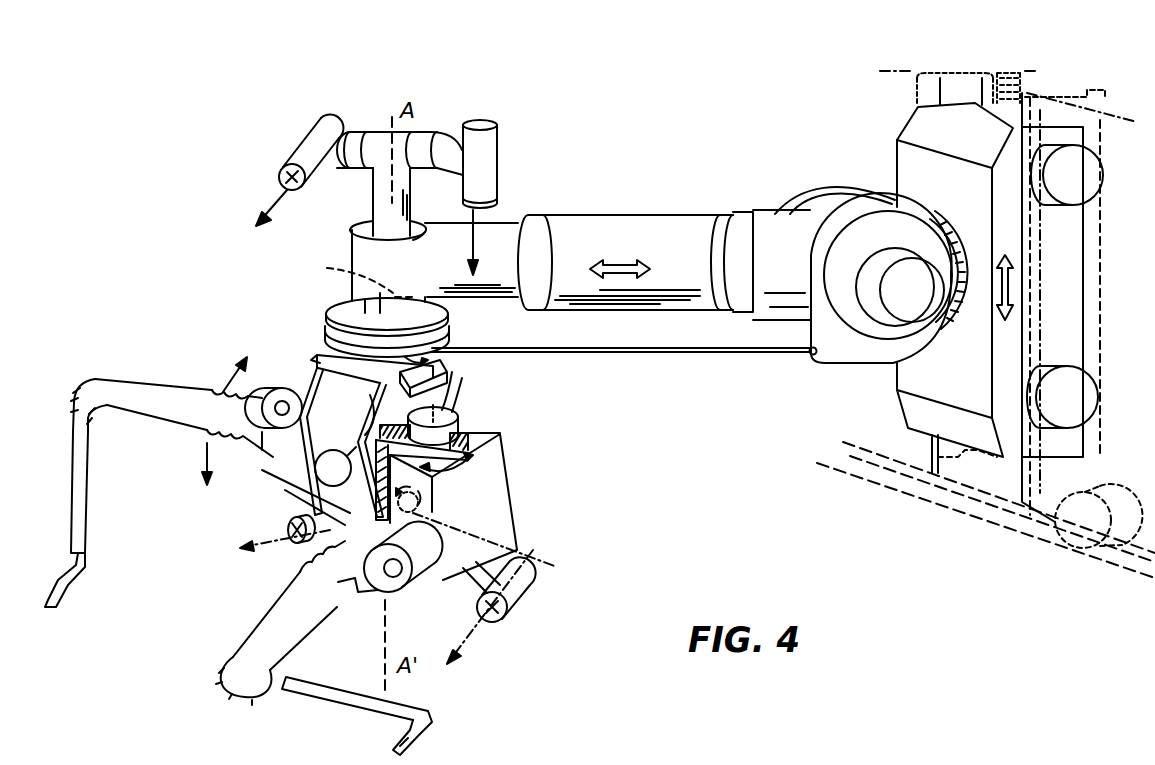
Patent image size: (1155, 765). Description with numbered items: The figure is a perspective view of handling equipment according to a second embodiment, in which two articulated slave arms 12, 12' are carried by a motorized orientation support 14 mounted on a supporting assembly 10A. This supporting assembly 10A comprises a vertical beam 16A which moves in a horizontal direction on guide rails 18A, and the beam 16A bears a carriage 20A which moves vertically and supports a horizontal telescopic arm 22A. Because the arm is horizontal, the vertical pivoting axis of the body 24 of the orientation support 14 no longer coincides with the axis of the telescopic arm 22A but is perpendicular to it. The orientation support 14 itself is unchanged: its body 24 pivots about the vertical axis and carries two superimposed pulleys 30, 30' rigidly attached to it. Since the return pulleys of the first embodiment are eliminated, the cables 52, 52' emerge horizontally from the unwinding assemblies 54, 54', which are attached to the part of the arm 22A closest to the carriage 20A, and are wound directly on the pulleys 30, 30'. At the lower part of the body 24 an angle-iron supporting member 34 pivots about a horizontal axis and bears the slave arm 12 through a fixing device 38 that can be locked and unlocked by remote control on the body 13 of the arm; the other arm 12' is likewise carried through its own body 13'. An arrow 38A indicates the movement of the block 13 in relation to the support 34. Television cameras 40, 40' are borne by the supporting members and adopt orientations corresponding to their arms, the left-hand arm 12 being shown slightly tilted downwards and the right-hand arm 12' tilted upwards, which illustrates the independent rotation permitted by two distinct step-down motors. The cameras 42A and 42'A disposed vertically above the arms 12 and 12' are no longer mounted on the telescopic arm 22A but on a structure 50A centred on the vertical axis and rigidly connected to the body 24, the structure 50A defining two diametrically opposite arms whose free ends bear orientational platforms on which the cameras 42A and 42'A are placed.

The supporting assembly 10A is at (755, 170).
The articulated slave arm 12 is at (338, 648).
The articulated slave arm 12' is at (99, 519).
The body of slave arm 13 is at (475, 513).
The body of slave arm 13' is at (213, 441).
The motorized orientation support 14 is at (250, 281).
The vertical beam 16A is at (955, 73).
The guide rails 18A is at (1033, 529).
The carriage 20A is at (915, 140).
The horizontal telescopic arm 22A is at (703, 217).
The body 24 is at (462, 386).
The pulley 30 is at (349, 339).
The pulley 30' is at (348, 317).
The supporting member 34 is at (470, 440).
The fixing device 38 is at (451, 413).
The arrow 38A is at (479, 463).
The television camera 40 is at (498, 607).
The television camera 40' is at (278, 525).
The camera 42A is at (479, 168).
The camera 42'A is at (274, 170).
The structure 50A is at (438, 124).
The cable 52 is at (621, 368).
The cable 52' is at (351, 276).
The unwinding assembly 54 is at (877, 299).
The unwinding assembly 54' is at (835, 178).